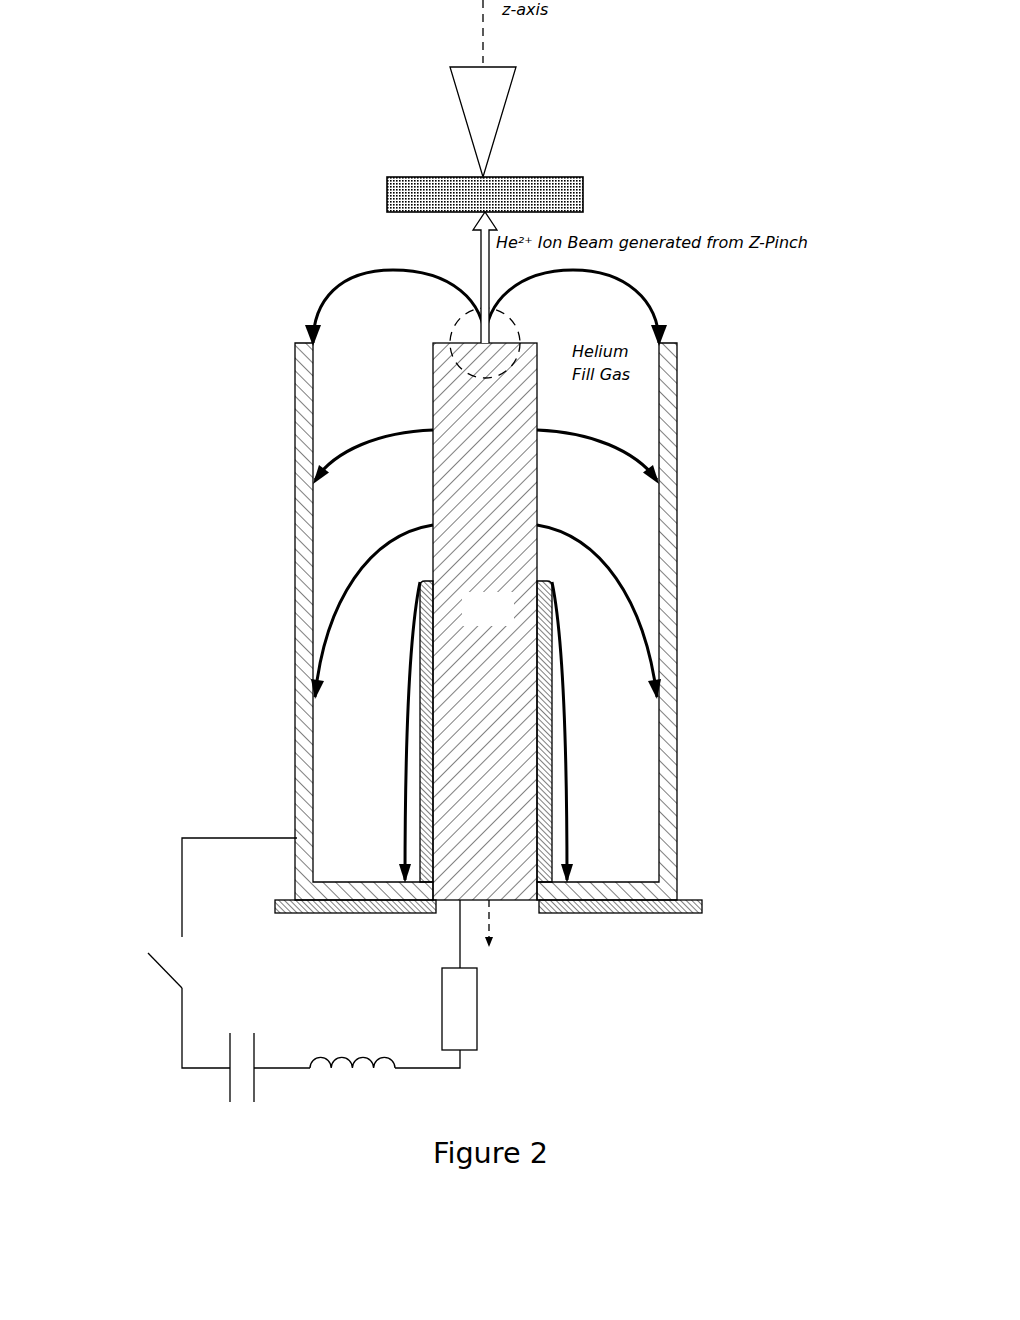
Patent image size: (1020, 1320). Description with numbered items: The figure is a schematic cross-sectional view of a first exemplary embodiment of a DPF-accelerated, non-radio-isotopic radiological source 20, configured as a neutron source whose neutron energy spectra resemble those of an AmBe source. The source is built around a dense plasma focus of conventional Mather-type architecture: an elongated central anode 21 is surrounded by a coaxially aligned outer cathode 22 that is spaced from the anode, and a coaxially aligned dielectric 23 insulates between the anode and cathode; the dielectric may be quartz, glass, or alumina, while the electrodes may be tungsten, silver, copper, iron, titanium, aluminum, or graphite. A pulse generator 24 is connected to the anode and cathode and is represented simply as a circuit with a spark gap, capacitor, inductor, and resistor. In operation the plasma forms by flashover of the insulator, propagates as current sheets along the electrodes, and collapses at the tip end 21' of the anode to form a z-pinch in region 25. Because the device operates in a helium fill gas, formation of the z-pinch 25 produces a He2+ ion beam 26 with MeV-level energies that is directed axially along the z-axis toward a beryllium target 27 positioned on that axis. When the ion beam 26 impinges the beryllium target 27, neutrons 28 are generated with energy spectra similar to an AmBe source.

The radiological source 20 is at (195, 265).
The central anode 21 is at (485, 621).
The tip end of the anode 21' is at (465, 621).
The outer cathode 22 is at (296, 587).
The dielectric 23 is at (385, 913).
The pulse generator 24 is at (118, 850).
The z-pinch region 25 is at (451, 332).
The He2+ ion beam 26 is at (478, 262).
The beryllium target 27 is at (541, 177).
The neutrons 28 is at (453, 83).